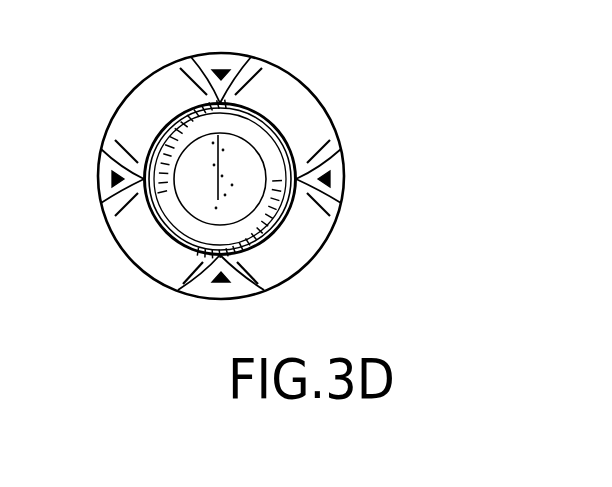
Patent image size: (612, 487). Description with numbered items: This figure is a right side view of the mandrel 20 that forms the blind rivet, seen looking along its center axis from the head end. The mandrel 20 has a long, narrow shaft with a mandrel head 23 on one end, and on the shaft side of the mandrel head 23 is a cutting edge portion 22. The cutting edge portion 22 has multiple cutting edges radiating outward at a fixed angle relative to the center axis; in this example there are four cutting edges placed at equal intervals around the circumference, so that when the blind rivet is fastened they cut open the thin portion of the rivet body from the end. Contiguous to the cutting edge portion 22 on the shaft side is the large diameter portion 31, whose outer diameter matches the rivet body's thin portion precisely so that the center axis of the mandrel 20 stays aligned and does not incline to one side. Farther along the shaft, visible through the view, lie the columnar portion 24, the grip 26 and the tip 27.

The mandrel 20 is at (357, 95).
The cutting edge portion 22 is at (277, 108).
The mandrel head 23 is at (130, 92).
The columnar portion 24 is at (200, 238).
The grip 26 is at (220, 179).
The tip 27 is at (168, 218).
The large diameter portion 31 is at (283, 222).